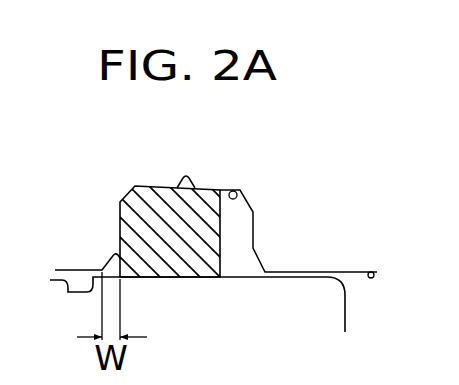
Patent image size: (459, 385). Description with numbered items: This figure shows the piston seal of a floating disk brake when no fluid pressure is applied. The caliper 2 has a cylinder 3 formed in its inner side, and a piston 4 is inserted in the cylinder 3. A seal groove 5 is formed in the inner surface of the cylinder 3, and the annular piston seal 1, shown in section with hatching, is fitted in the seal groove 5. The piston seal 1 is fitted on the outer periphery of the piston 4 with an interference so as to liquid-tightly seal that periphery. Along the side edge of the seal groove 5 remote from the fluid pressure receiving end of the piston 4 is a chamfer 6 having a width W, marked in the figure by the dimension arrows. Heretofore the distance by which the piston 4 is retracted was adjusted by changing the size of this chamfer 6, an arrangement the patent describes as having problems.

The piston seal 1 is at (157, 212).
The caliper 2 is at (278, 252).
The cylinder 3 is at (377, 268).
The piston 4 is at (260, 310).
The seal groove 5 is at (238, 192).
The chamfer 6 is at (112, 260).